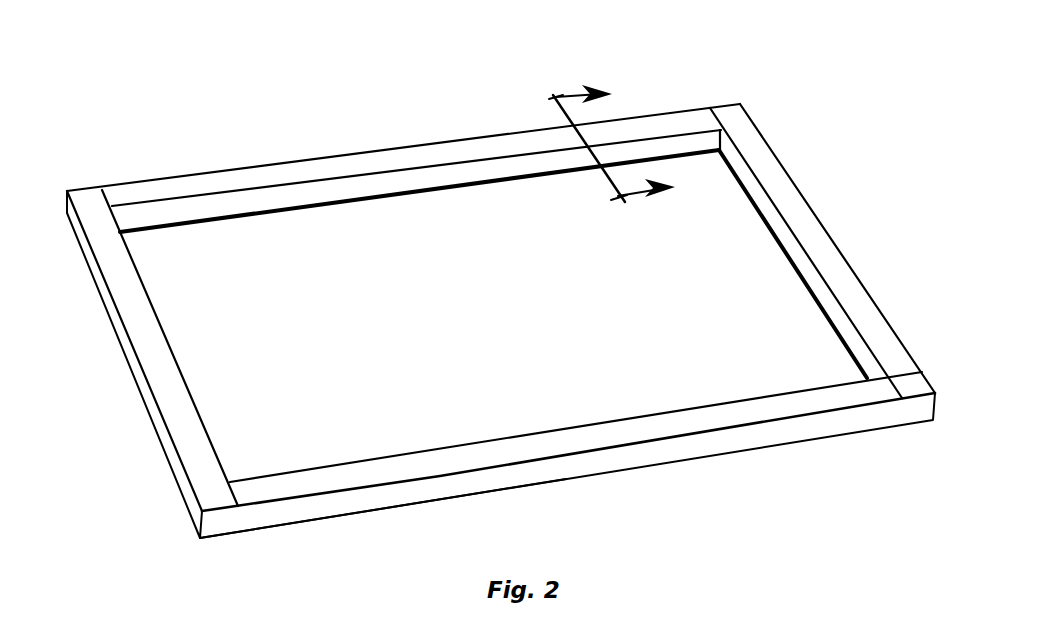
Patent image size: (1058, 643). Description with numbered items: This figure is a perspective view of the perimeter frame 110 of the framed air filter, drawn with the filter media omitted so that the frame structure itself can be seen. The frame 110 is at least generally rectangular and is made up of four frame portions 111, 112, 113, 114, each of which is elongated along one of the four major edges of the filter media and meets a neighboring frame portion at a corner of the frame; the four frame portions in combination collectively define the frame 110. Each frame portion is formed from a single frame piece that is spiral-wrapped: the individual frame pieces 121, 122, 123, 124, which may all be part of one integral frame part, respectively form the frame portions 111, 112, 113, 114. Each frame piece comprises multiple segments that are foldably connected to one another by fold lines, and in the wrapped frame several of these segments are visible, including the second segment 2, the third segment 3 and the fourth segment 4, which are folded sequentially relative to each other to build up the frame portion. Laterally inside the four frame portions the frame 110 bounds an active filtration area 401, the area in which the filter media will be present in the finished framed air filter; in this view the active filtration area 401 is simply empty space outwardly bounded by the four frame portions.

The perimeter frame 110 is at (496, 296).
The frame portion 111 is at (475, 140).
The frame portion 112 is at (780, 162).
The frame portion 113 is at (567, 487).
The frame portion 114 is at (138, 374).
The frame piece 121 is at (403, 168).
The frame piece 122 is at (822, 244).
The frame piece 123 is at (567, 476).
The frame piece 124 is at (147, 364).
The second segment 2 is at (352, 502).
The third segment 3 is at (292, 175).
The fourth segment 4 is at (302, 193).
The active filtration area 401 is at (502, 321).